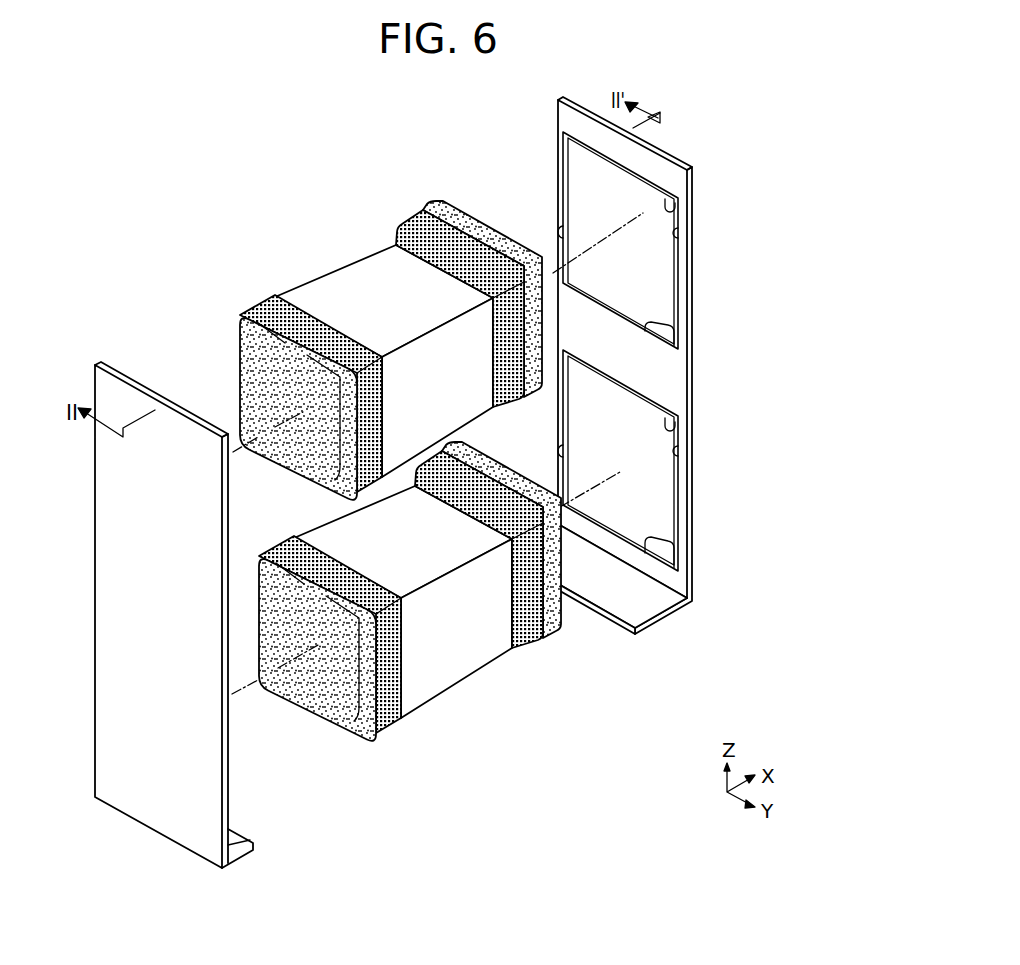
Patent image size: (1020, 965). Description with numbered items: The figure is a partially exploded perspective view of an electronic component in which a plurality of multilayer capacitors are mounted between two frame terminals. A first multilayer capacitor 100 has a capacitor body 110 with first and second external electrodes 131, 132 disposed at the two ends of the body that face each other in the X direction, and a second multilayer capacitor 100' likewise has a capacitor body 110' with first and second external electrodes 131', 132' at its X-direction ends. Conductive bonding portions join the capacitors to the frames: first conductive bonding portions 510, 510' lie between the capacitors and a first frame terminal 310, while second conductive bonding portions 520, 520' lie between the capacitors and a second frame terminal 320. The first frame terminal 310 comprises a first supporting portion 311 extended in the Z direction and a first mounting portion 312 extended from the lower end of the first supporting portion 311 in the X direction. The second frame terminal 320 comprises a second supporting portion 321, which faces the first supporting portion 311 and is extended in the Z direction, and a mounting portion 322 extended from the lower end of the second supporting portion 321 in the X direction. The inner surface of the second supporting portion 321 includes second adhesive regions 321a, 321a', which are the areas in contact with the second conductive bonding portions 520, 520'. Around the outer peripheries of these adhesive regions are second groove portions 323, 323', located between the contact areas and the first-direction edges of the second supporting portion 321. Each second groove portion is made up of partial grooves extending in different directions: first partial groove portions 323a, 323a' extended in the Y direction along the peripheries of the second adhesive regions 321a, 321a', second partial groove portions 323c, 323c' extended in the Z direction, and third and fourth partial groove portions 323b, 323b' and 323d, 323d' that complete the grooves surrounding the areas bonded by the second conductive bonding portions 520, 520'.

The multilayer capacitor 100 is at (361, 327).
The capacitor body 110 is at (384, 356).
The first external electrode 131 is at (302, 372).
The second external electrode 132 is at (457, 282).
The first conductive bonding portion 510 is at (268, 396).
The second conductive bonding portion 520 is at (482, 276).
The multilayer capacitor 100' is at (423, 627).
The capacitor body 110' is at (419, 628).
The first external electrode 131' is at (356, 668).
The second external electrode 132' is at (494, 576).
The first conductive bonding portion 510' is at (337, 686).
The second conductive bonding portion 520' is at (528, 549).
The first frame terminal 310 is at (231, 632).
The first supporting portion 311 is at (193, 827).
The first mounting portion 312 is at (253, 841).
The second frame terminal 320 is at (657, 373).
The second supporting portion 321 is at (657, 365).
The mounting portion 322 is at (643, 597).
The second adhesive region 321a is at (587, 240).
The second adhesive region 321a' is at (664, 460).
The second groove portion 323 is at (685, 272).
The first partial groove portion 323a is at (703, 336).
The third partial groove portion 323b is at (713, 205).
The second partial groove portion 323c is at (717, 234).
The fourth partial groove portion 323d is at (659, 251).
The second groove portion 323' is at (688, 488).
The first partial groove portion 323a' is at (705, 553).
The third partial groove portion 323b' is at (715, 422).
The second partial groove portion 323c' is at (719, 450).
The fourth partial groove portion 323d' is at (661, 468).